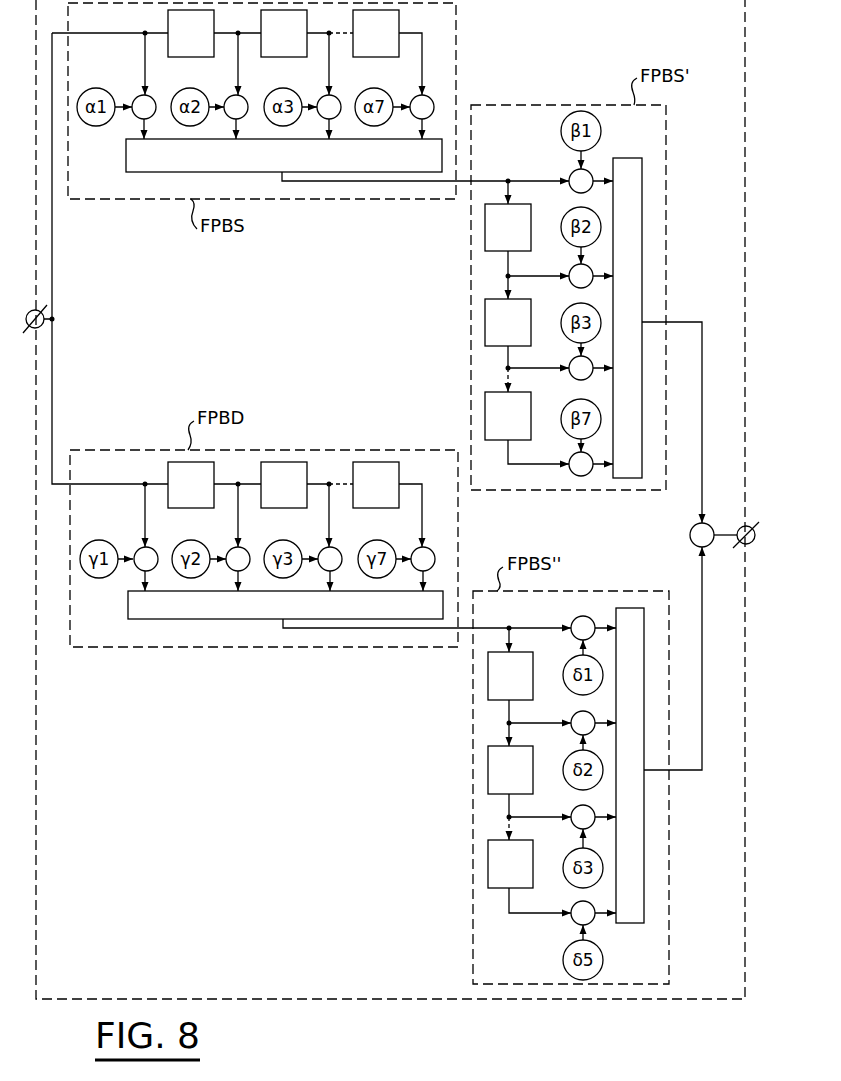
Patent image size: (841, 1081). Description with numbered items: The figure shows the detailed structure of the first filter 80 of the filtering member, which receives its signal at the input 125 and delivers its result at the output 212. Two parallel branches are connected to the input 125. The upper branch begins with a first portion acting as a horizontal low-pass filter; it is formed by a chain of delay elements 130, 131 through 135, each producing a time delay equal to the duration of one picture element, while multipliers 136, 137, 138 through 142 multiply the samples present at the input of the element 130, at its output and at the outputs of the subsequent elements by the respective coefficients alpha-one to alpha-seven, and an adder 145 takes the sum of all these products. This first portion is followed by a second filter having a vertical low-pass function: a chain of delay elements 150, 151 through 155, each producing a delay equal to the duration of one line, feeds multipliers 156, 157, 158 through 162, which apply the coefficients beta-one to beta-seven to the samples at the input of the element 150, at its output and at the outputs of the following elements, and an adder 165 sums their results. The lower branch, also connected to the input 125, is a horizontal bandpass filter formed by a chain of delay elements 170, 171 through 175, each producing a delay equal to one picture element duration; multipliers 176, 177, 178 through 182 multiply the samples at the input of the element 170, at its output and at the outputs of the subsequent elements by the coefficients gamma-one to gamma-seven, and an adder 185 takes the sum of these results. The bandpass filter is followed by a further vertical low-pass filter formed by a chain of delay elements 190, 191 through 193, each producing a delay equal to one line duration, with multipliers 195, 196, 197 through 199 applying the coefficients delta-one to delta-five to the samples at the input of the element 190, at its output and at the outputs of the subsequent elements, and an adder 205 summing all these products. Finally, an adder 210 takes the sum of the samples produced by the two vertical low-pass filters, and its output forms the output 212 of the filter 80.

The first filter 80 is at (375, 978).
The input 125 is at (43, 329).
The delay element 130 is at (168, 27).
The delay element 131 is at (305, 33).
The delay element 135 is at (399, 33).
The multiplier 136 is at (140, 96).
The multiplier 137 is at (227, 96).
The multiplier 138 is at (320, 96).
The multiplier 142 is at (414, 96).
The adder 145 is at (134, 169).
The delay element 150 is at (485, 232).
The delay element 151 is at (485, 322).
The delay element 155 is at (485, 410).
The multiplier 156 is at (571, 175).
The multiplier 157 is at (574, 270).
The multiplier 158 is at (576, 363).
The multiplier 162 is at (576, 459).
The adder 165 is at (633, 222).
The delay element 170 is at (168, 478).
The delay element 171 is at (261, 478).
The delay element 175 is at (353, 478).
The multiplier 176 is at (137, 548).
The multiplier 177 is at (230, 548).
The multiplier 178 is at (324, 548).
The multiplier 182 is at (417, 548).
The adder 185 is at (136, 619).
The delay element 190 is at (488, 678).
The delay element 191 is at (488, 770).
The delay element 193 is at (488, 865).
The multiplier 195 is at (575, 620).
The multiplier 196 is at (577, 716).
The multiplier 197 is at (577, 811).
The multiplier 199 is at (577, 906).
The adder 205 is at (638, 877).
The adder 210 is at (690, 537).
The output 212 is at (739, 526).